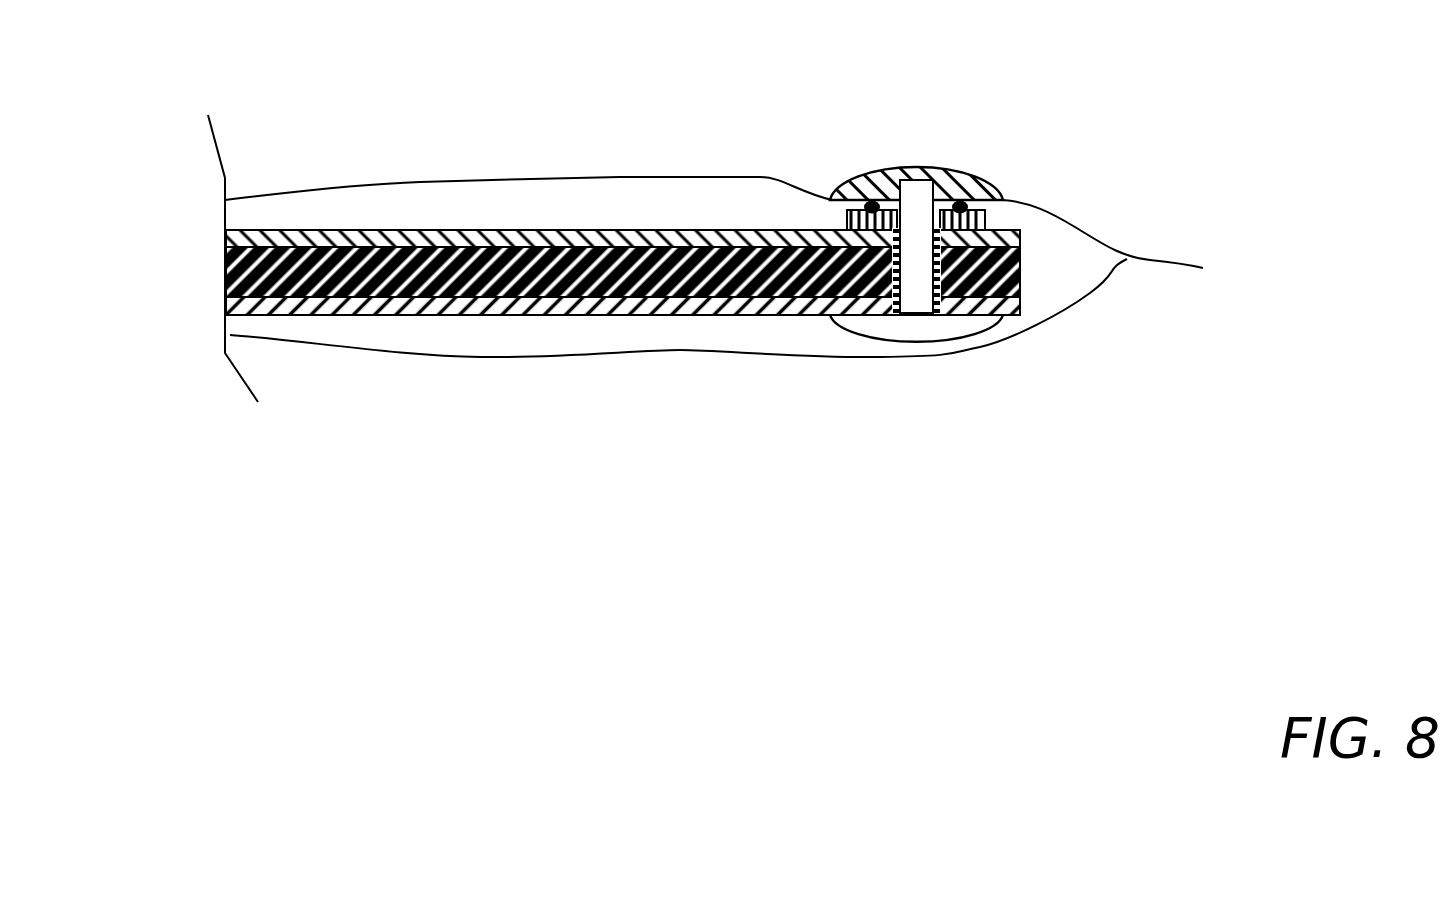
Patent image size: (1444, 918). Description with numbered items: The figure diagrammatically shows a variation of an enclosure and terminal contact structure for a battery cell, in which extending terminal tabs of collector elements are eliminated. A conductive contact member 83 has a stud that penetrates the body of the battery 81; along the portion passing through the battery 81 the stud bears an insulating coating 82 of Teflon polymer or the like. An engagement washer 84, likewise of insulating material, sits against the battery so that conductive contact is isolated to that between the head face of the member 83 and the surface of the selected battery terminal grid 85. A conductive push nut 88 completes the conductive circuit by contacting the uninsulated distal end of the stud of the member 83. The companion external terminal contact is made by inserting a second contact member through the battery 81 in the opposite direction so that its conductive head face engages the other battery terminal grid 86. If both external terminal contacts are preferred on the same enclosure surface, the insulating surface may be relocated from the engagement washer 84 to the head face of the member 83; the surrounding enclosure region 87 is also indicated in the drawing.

The battery 81 is at (227, 260).
The insulating coating 82 is at (900, 313).
The conductive contact member 83 is at (980, 325).
The engagement washer 84 is at (988, 218).
The battery terminal grid 85 is at (615, 315).
The battery terminal grid 86 is at (457, 232).
The housing body 87 is at (1167, 265).
The conductive push nut 88 is at (948, 163).